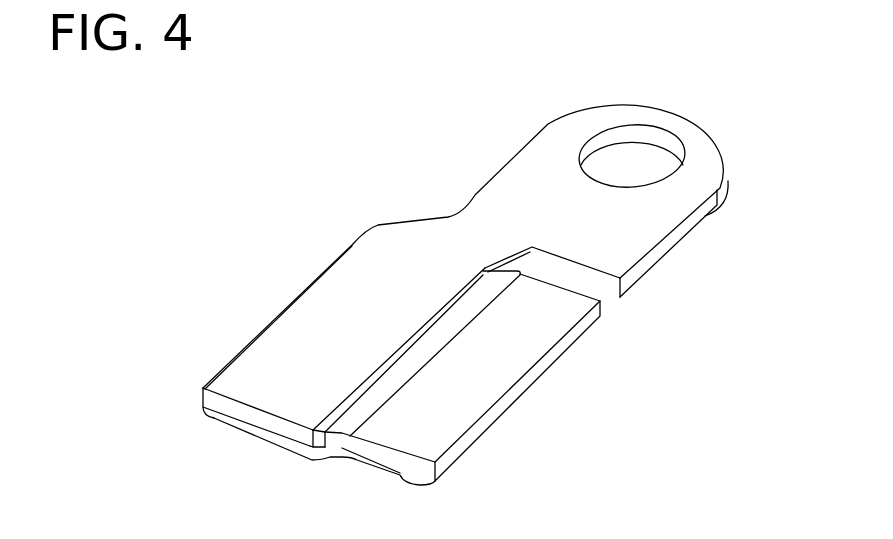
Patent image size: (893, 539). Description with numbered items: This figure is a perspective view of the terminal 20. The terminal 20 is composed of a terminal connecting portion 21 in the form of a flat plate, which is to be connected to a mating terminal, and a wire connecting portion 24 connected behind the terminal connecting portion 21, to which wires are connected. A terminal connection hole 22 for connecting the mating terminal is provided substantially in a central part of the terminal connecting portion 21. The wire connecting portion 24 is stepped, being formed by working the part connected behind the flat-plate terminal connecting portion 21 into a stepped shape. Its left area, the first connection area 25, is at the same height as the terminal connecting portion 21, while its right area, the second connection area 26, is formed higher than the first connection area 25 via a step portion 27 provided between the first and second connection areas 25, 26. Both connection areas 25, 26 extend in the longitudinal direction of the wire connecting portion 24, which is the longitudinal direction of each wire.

The terminal 20 is at (447, 86).
The terminal connecting portion 21 is at (662, 215).
The terminal connection hole 22 is at (657, 163).
The wire connecting portion 24 is at (410, 322).
The first connection area 25 is at (305, 320).
The second connection area 26 is at (480, 380).
The step portion 27 is at (332, 422).